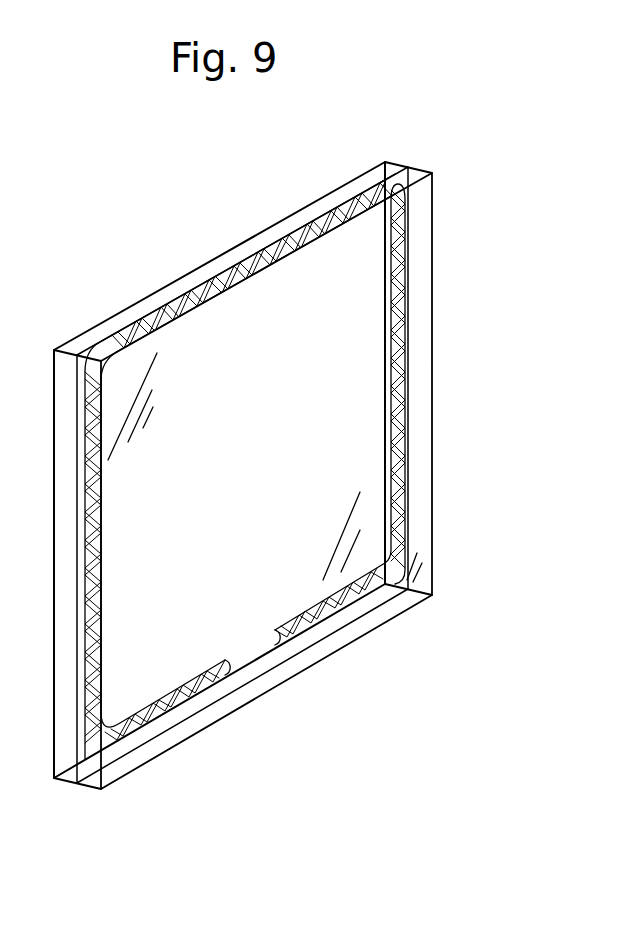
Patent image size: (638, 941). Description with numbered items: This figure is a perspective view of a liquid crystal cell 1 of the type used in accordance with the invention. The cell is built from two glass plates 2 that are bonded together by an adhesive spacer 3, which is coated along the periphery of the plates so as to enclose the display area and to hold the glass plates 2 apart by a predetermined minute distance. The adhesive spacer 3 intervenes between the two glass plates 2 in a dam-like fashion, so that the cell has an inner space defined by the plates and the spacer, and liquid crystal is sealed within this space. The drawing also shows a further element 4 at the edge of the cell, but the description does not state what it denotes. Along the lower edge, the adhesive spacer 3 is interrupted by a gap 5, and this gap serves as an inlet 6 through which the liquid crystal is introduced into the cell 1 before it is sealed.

The liquid crystal cell 1 is at (93, 325).
The glass plate 2 is at (393, 162).
The adhesive spacer 3 is at (402, 323).
The sealant 4 is at (432, 233).
The gap 5 is at (232, 678).
The inlet 6 is at (258, 663).